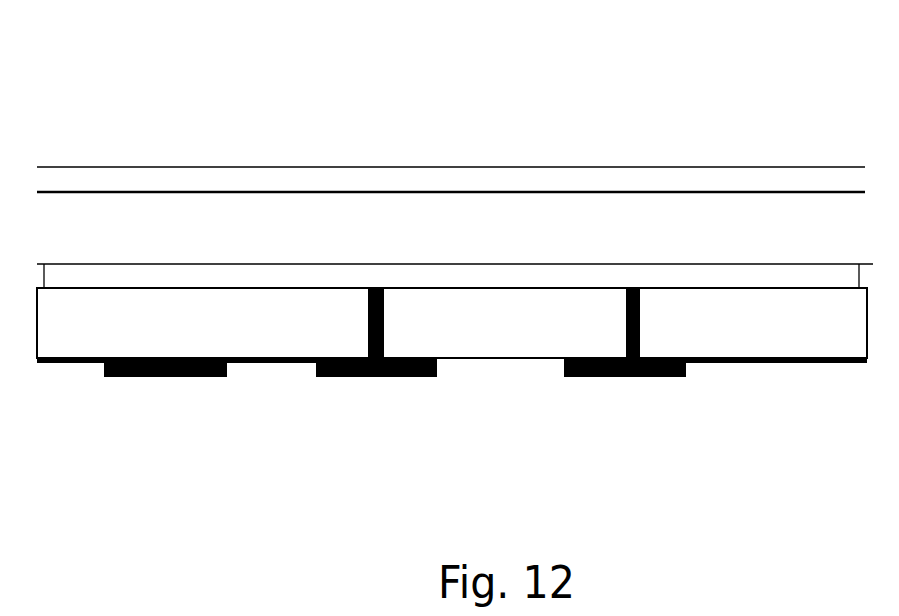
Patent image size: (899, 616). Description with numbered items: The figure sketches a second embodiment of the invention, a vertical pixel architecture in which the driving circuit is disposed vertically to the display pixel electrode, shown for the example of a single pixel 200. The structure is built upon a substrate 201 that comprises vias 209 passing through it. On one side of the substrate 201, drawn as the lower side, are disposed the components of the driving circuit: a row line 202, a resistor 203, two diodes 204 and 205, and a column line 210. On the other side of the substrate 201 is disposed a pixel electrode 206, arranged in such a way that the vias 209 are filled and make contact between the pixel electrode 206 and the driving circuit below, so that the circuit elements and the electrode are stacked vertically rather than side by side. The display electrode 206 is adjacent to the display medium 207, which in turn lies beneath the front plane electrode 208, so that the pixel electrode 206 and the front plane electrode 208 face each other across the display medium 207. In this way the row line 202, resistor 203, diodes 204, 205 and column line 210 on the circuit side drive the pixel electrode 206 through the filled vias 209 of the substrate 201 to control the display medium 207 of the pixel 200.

The pixel 200 is at (452, 323).
The substrate 201 is at (293, 328).
The row line 202 is at (67, 368).
The resistor 203 is at (195, 377).
The diode 204 is at (413, 384).
The diode 205 is at (647, 384).
The pixel electrode 206 is at (89, 272).
The display medium 207 is at (211, 240).
The front plane electrode 208 is at (353, 175).
The vias 209 is at (623, 318).
The column line 210 is at (790, 368).